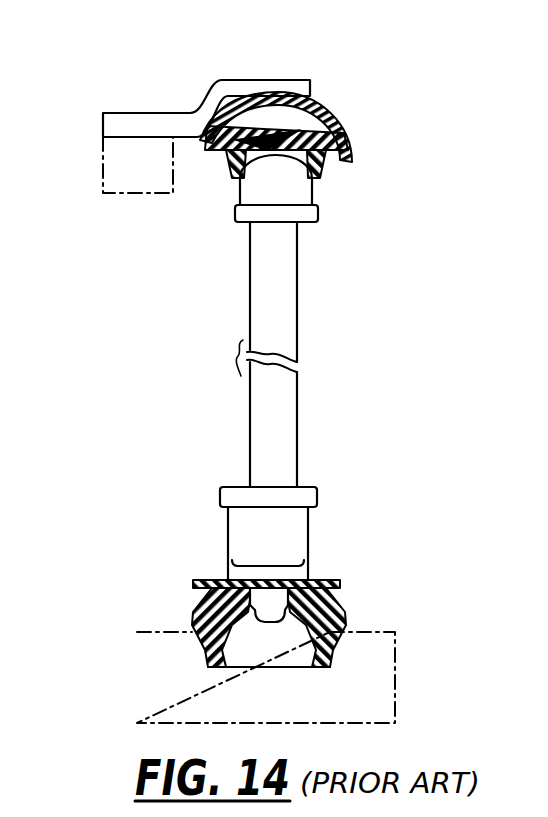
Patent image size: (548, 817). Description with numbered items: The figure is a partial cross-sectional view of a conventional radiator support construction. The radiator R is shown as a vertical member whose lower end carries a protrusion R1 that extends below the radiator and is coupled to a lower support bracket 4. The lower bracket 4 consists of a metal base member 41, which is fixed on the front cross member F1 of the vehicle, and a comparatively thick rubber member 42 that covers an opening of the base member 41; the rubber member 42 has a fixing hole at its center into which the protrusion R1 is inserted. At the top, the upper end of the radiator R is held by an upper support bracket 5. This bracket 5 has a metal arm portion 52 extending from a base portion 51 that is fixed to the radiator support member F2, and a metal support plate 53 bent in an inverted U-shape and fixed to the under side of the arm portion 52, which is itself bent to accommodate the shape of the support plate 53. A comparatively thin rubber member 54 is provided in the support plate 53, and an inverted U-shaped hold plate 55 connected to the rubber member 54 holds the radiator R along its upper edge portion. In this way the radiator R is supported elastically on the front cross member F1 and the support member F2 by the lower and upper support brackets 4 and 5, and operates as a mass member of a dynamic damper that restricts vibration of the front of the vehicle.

The upper support bracket 5 is at (320, 78).
The base portion 51 is at (158, 122).
The arm portion 52 is at (267, 80).
The support plate 53 is at (334, 113).
The rubber member 54 is at (337, 148).
The hold plate 55 is at (228, 178).
The radiator R is at (292, 305).
The protrusion R1 is at (280, 590).
The lower support bracket 4 is at (340, 648).
The base member 41 is at (193, 622).
The rubber member 42 is at (327, 610).
The front cross member F1 is at (150, 688).
The radiator support member F2 is at (122, 176).